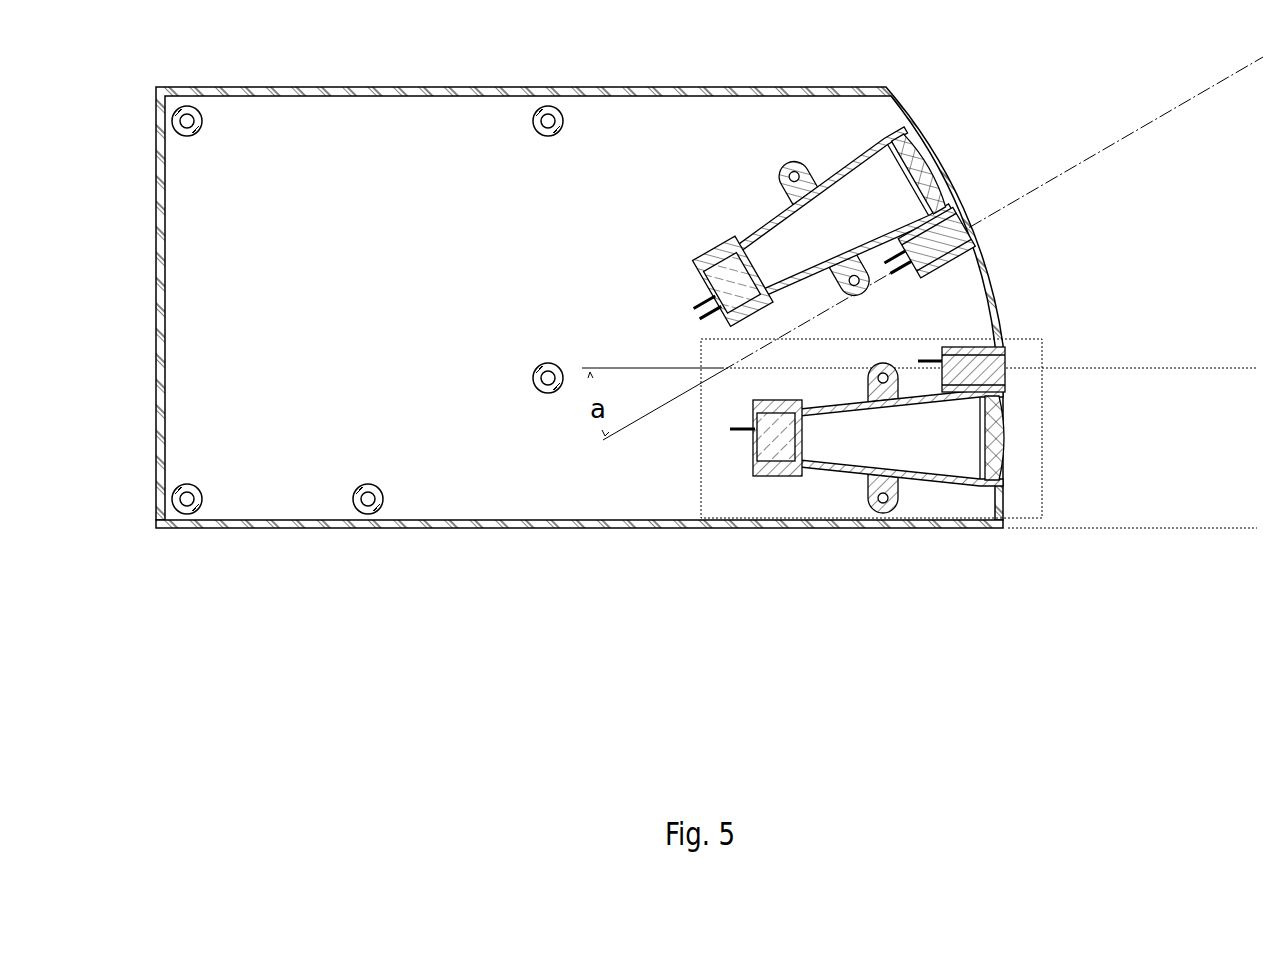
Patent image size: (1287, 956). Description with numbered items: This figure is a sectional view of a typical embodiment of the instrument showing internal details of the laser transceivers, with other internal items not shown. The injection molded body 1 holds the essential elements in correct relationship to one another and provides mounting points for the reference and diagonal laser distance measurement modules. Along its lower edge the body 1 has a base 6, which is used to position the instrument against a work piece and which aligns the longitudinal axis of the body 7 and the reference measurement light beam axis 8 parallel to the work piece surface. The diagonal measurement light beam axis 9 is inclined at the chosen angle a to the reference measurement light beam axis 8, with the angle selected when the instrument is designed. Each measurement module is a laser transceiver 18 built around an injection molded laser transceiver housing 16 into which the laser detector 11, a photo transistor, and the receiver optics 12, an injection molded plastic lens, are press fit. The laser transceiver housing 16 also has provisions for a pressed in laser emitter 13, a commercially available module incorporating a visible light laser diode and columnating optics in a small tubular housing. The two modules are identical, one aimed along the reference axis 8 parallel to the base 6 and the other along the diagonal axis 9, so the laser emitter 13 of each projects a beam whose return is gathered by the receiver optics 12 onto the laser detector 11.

The body 1 is at (457, 532).
The base 6 is at (638, 530).
The longitudinal axis of the body 7 is at (1068, 531).
The reference measurement light beam axis 8 is at (1170, 368).
The diagonal measurement light beam axis 9 is at (1140, 128).
The laser detector 11 is at (755, 451).
The receiver optics 12 is at (1070, 468).
The laser emitter 13 is at (973, 233).
The laser transceiver housing 16 is at (962, 562).
The laser transceiver 18 is at (1046, 497).